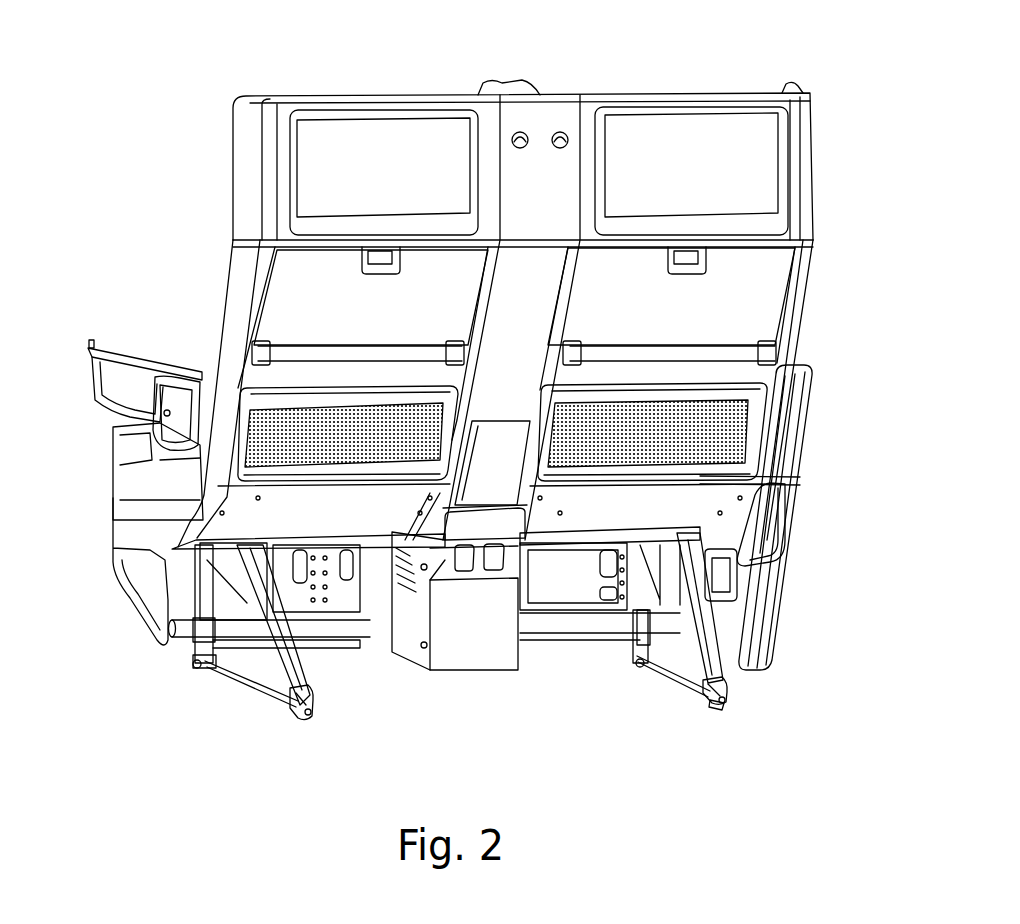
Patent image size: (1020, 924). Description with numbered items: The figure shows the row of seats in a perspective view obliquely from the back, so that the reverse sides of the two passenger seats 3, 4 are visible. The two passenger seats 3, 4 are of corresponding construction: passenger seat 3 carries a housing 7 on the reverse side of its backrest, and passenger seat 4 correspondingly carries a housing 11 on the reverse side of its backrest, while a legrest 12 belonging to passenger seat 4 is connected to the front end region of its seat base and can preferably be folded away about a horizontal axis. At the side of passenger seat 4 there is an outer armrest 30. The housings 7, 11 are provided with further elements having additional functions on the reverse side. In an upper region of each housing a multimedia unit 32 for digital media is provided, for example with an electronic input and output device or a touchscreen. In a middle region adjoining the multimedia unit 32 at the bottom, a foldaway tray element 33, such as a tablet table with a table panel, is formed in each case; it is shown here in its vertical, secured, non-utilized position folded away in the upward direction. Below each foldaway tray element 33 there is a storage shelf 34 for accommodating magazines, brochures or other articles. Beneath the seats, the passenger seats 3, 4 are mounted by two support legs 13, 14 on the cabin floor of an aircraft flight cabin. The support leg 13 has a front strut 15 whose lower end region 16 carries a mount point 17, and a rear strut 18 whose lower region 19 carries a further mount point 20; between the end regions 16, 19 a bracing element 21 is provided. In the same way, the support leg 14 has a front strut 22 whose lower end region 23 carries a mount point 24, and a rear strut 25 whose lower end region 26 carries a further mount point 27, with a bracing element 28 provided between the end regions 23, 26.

The passenger seat 3 is at (716, 72).
The passenger seat 4 is at (380, 80).
The housing 7 is at (811, 141).
The housing 11 is at (257, 93).
The legrest 12 is at (118, 560).
The support leg 13 is at (738, 690).
The support leg 14 is at (310, 676).
The front strut 15 is at (630, 647).
The lower end region 16 is at (637, 668).
The mount point 17 is at (634, 668).
The rear strut 18 is at (710, 633).
The lower region 19 is at (738, 706).
The mount point 20 is at (715, 706).
The bracing element 21 is at (668, 690).
The front strut 22 is at (185, 651).
The lower end region 23 is at (187, 670).
The mount point 24 is at (195, 668).
The rear strut 25 is at (282, 648).
The lower end region 26 is at (313, 713).
The mount point 27 is at (303, 719).
The bracing element 28 is at (235, 688).
The outer armrest 30 is at (115, 340).
The multimedia unit 32 is at (371, 176).
The foldaway tray element 33 is at (285, 302).
The storage shelf 34 is at (292, 408).